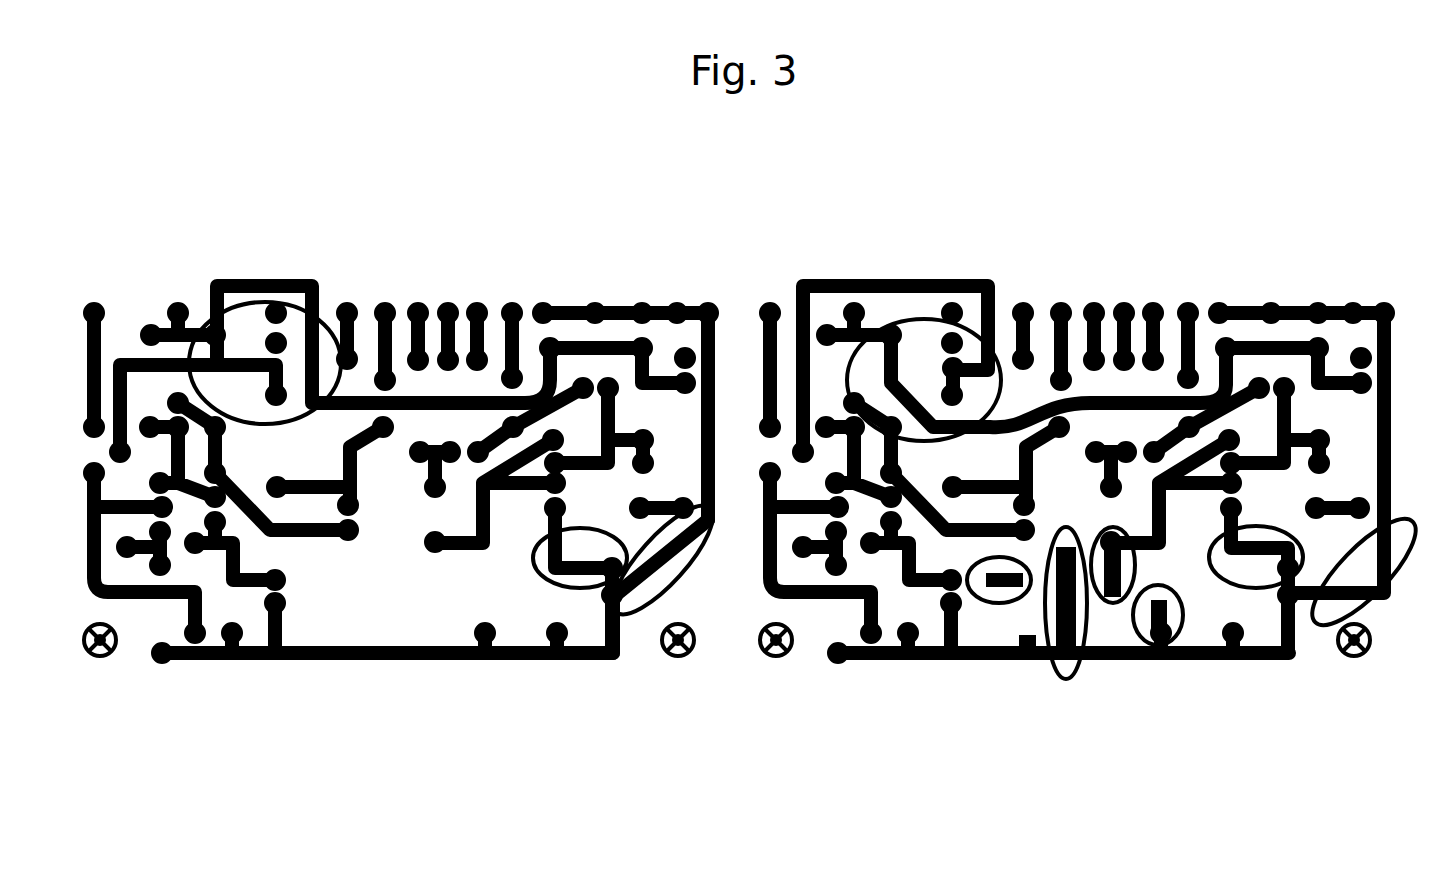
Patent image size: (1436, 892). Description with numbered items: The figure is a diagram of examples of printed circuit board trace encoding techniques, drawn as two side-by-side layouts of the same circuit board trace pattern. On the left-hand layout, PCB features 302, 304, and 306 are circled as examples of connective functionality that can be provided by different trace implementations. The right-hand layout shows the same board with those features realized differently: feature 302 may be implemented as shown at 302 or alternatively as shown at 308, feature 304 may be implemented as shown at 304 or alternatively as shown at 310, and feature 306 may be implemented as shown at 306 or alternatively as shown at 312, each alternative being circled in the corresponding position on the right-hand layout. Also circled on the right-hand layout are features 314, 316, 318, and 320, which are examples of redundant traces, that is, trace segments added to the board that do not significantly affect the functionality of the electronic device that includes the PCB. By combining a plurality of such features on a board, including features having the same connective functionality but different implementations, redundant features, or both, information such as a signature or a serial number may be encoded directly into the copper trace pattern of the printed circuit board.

The PCB feature 302 is at (245, 308).
The PCB feature 304 is at (550, 582).
The PCB feature 306 is at (650, 605).
The alternative implementation of feature 308 is at (908, 325).
The alternative implementation of feature 310 is at (1236, 587).
The alternative implementation of feature 312 is at (1326, 625).
The redundant trace 314 is at (986, 600).
The redundant trace 316 is at (1038, 650).
The redundant trace 318 is at (1113, 604).
The redundant trace 320 is at (1145, 645).